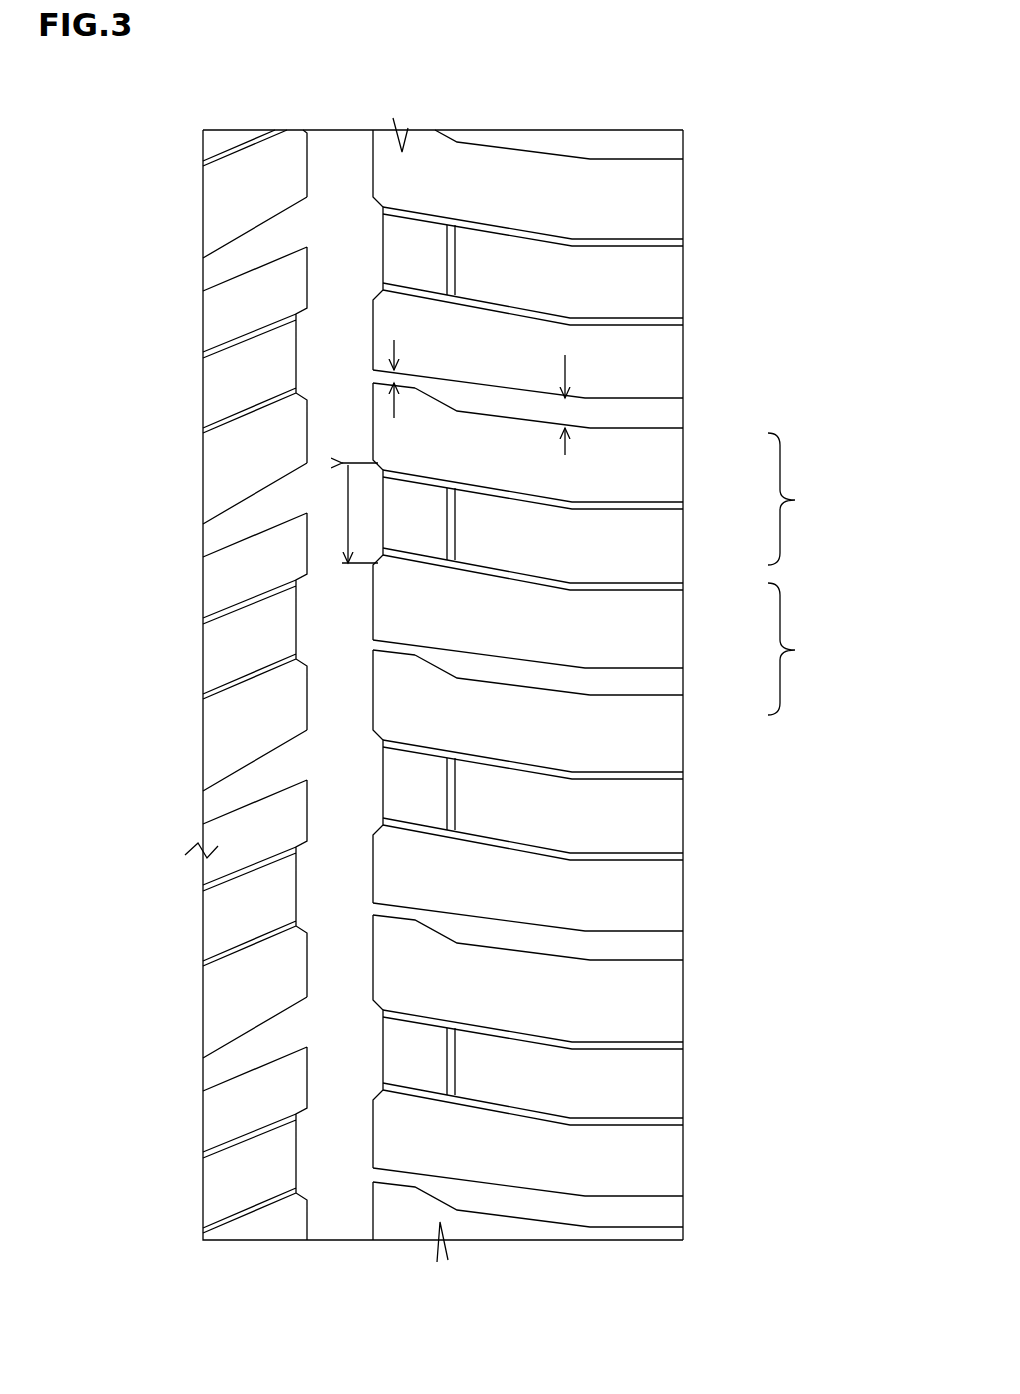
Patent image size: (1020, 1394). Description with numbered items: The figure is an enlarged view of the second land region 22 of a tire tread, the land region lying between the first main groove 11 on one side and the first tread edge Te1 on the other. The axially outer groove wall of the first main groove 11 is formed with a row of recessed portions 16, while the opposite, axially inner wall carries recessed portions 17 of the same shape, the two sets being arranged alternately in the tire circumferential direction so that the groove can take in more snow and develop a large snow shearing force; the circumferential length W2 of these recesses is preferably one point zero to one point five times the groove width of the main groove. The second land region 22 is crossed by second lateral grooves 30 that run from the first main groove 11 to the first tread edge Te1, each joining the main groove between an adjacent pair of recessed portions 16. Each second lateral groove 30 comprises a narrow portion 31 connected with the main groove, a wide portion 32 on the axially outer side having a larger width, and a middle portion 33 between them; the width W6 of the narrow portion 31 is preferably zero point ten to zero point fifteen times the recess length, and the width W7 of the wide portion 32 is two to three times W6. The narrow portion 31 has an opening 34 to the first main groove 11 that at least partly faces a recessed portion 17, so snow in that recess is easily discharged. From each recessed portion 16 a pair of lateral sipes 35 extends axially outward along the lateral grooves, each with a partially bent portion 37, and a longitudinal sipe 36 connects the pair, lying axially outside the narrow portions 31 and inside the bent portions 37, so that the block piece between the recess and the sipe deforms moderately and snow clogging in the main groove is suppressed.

The first main groove 11 is at (340, 195).
The second land region 22 is at (515, 186).
The first tread edge Te1 is at (687, 180).
The recessed portions 16 is at (372, 250).
The recessed portions 17 is at (303, 358).
The length of recessed portion in tire circumferential direction W2 is at (345, 512).
The groove width of narrow portion W6 is at (398, 373).
The groove width of wide portion W7 is at (566, 400).
The second lateral grooves 30 is at (522, 1206).
The narrow portion 31 is at (401, 386).
The wide portion 32 is at (641, 417).
The middle portion 33 is at (441, 391).
The opening 34 is at (373, 640).
The lateral sipes 35 is at (513, 762).
The longitudinal sipe 36 is at (448, 795).
The bent portion 37 is at (577, 779).